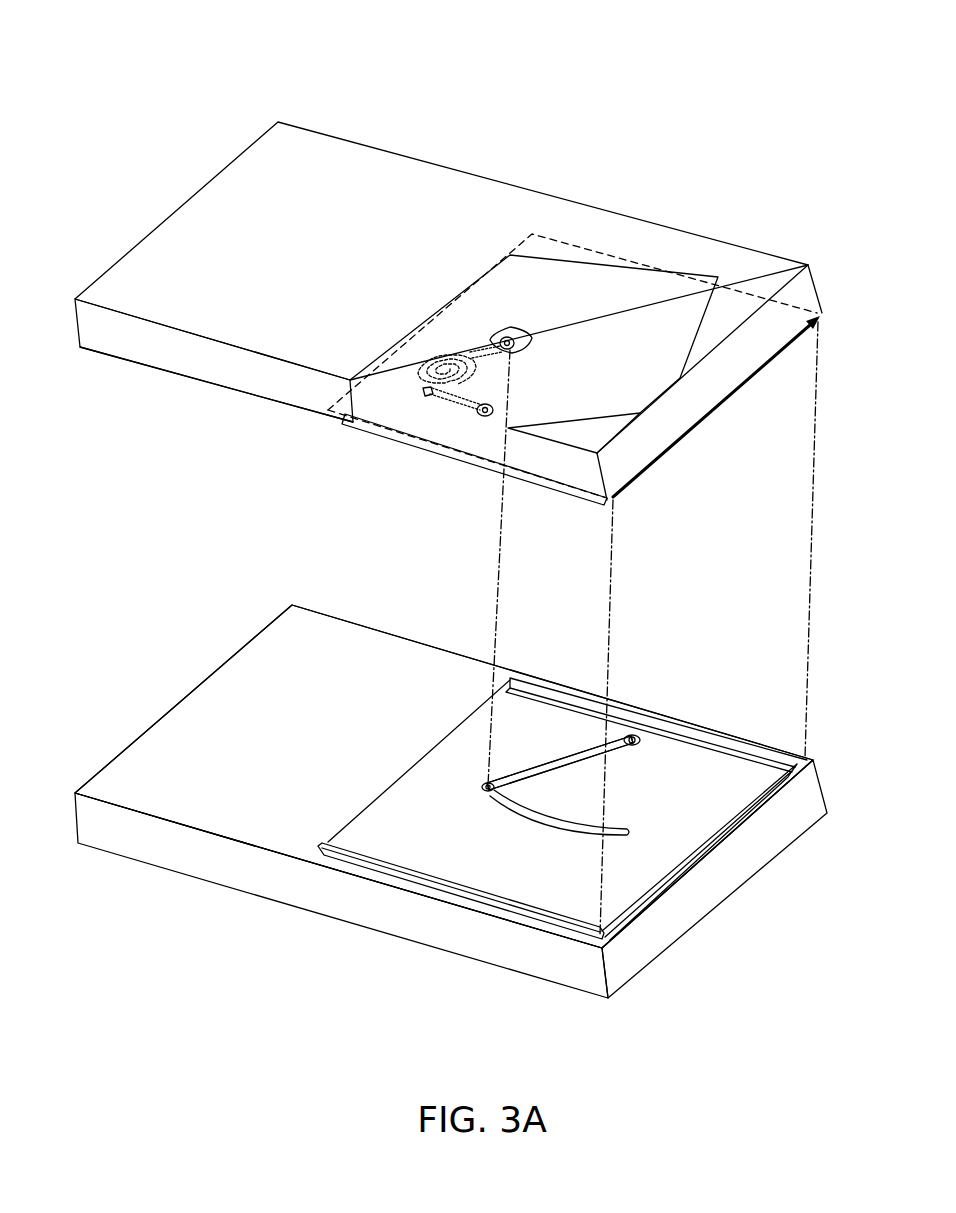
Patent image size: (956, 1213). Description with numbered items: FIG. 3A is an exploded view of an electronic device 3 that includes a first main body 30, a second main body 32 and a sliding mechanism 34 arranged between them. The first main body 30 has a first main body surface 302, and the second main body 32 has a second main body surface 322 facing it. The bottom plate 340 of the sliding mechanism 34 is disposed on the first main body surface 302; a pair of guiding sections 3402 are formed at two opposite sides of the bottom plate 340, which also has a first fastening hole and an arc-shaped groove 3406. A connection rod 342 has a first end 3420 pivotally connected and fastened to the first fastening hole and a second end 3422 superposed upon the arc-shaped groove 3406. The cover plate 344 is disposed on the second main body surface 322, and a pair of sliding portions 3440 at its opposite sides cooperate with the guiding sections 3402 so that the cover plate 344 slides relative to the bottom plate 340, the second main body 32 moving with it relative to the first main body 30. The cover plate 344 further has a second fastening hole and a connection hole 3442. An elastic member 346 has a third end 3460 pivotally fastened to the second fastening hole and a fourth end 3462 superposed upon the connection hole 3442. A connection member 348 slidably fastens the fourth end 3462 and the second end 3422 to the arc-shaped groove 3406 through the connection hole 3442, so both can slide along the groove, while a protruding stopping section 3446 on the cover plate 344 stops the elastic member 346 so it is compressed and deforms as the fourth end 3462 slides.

The electronic device 3 is at (374, 72).
The first main body 30 is at (163, 870).
The first main body surface 302 is at (177, 747).
The second main body 32 is at (203, 183).
The second main body surface 322 is at (173, 377).
The sliding mechanism 34 is at (342, 612).
The bottom plate 340 is at (413, 765).
The connection rod 342 is at (550, 760).
The cover plate 344 is at (382, 424).
The elastic member 346 is at (447, 393).
The connection member 348 is at (500, 354).
The guiding sections 3402 is at (603, 948).
The arc-shaped groove 3406 is at (537, 822).
The first end 3420 is at (632, 737).
The second end 3422 is at (485, 792).
The sliding portions 3440 is at (817, 322).
The connection hole 3442 is at (523, 328).
The stopping section 3446 is at (424, 392).
The third end 3460 is at (480, 410).
The fourth end 3462 is at (497, 338).